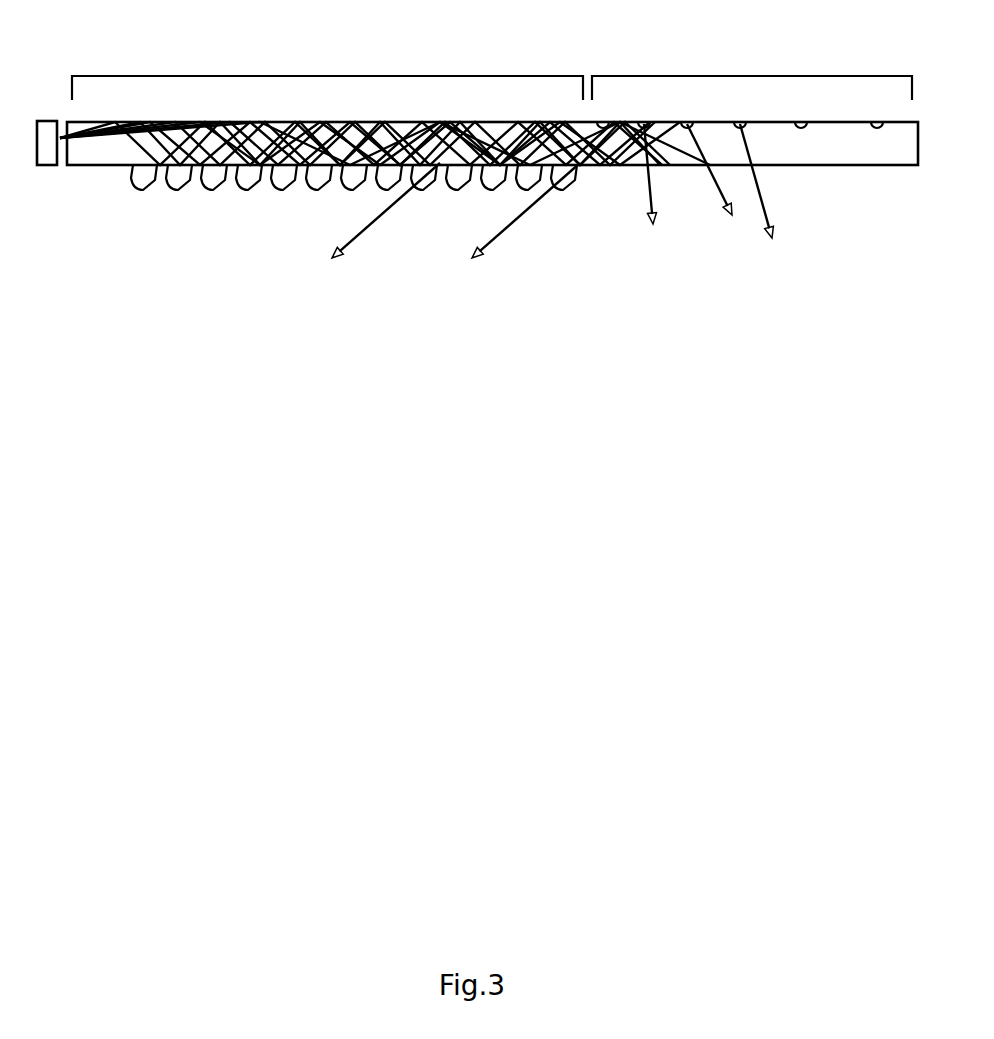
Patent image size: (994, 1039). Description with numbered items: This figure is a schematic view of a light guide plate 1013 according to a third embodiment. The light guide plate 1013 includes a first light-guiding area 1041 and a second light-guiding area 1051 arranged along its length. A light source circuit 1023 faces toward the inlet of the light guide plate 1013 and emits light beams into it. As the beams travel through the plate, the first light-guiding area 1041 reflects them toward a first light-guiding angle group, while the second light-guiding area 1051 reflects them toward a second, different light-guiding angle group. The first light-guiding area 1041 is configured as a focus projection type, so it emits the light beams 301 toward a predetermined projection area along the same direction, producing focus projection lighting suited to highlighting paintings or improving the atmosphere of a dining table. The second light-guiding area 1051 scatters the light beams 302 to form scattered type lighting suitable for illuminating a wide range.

The light guide plate 1013 is at (892, 165).
The light source circuit 1023 is at (47, 155).
The first light-guiding area 1041 is at (313, 77).
The second light-guiding area 1051 is at (744, 76).
The light beams 301 is at (512, 222).
The light beams 302 is at (705, 180).